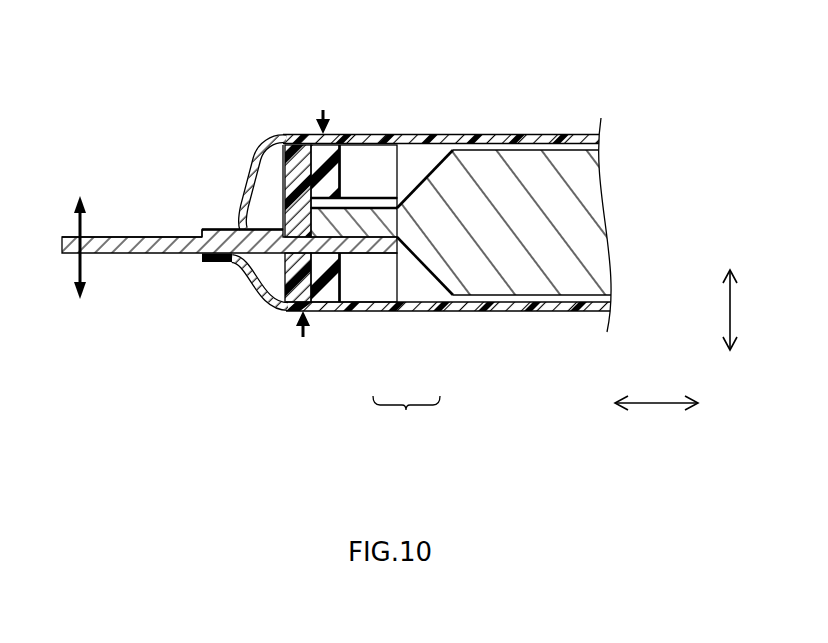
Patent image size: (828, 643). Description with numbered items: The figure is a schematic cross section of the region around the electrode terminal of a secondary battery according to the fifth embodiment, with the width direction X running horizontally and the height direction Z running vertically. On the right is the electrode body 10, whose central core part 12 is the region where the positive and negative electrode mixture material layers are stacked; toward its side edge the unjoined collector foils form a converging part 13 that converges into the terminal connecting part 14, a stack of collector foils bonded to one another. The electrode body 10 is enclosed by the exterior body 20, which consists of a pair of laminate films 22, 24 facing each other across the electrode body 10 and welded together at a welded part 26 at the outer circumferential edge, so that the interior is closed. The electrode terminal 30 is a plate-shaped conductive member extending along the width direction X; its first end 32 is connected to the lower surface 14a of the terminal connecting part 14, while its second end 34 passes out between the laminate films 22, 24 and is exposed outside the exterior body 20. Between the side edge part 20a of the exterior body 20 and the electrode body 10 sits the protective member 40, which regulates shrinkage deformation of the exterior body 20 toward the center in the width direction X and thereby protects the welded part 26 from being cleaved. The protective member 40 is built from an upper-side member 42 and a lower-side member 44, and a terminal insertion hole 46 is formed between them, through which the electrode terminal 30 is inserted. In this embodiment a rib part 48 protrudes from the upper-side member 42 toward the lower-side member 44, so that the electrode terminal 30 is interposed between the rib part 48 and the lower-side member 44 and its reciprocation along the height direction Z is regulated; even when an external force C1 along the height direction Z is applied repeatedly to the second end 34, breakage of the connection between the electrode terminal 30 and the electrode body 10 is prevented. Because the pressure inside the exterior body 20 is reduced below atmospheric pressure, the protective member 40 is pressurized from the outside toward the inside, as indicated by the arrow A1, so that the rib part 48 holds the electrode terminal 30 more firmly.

The electrode body 10 is at (608, 132).
The core part 12 is at (530, 177).
The converging part 13 is at (398, 218).
The terminal connecting part 14 is at (312, 196).
The lower surface of the terminal connecting part 14a is at (332, 303).
The exterior body 20 is at (458, 126).
The side edge part of the exterior body 20a is at (247, 183).
The laminate film 22 is at (497, 132).
The laminate film 24 is at (527, 313).
The welded part 26 is at (220, 232).
The electrode terminal 30 is at (128, 255).
The first end of the electrode terminal 32 is at (387, 173).
The second end of the electrode terminal 34 is at (126, 237).
The protective member 40 is at (406, 417).
The upper-side member 42 is at (400, 303).
The lower-side member 44 is at (385, 303).
The terminal insertion hole 46 is at (262, 308).
The rib part 48 is at (283, 178).
The arrow A1 is at (324, 108).
The external force C1 is at (90, 212).
The width direction X is at (656, 416).
The height direction Z is at (740, 310).